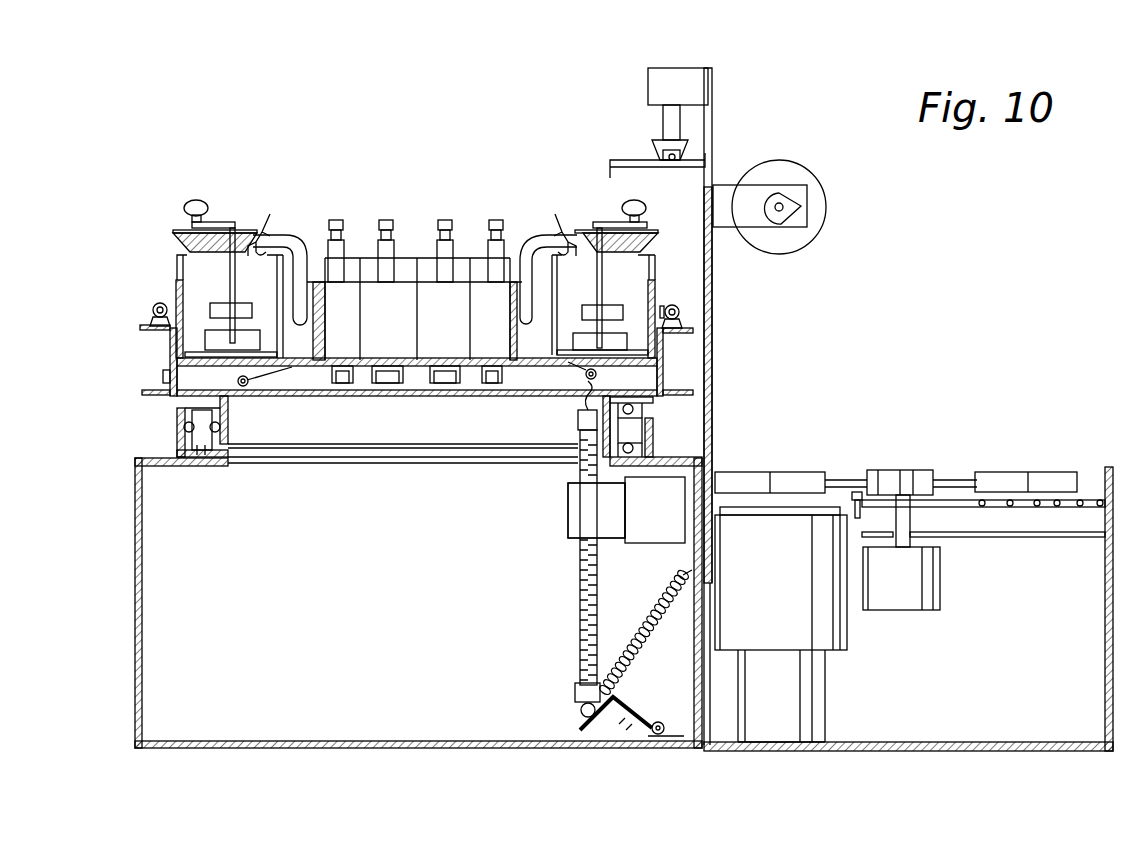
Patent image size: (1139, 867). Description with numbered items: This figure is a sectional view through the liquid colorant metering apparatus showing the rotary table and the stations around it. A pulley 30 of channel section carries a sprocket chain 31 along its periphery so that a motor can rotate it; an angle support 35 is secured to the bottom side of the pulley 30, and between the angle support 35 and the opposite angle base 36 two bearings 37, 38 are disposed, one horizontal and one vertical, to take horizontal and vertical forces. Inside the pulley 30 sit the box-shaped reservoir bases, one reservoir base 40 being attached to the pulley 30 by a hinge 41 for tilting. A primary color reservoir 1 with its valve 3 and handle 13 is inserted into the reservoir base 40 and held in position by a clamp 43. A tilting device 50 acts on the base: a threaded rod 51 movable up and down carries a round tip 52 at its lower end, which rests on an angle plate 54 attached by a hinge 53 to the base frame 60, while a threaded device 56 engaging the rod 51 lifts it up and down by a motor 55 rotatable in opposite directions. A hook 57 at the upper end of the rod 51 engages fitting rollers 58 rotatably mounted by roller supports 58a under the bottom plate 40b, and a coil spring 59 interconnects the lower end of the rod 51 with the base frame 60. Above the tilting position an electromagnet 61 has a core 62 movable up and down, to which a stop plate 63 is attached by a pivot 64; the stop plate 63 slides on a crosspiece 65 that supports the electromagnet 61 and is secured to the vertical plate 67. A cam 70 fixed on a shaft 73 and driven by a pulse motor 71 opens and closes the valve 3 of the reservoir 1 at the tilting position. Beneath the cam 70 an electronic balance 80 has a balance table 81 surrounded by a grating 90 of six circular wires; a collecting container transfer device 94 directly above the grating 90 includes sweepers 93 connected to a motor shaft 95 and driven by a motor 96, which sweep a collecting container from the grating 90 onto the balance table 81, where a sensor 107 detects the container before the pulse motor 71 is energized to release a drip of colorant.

The primary color reservoir 1 is at (557, 340).
The valve 3 is at (652, 228).
The handle 13 is at (532, 259).
The pulley 30 is at (164, 325).
The sprocket chain 31 is at (163, 377).
The angle support 35 is at (228, 409).
The angle base 36 is at (177, 426).
The bearing 37 is at (200, 455).
The bearing 38 is at (635, 407).
The reservoir base 40 is at (655, 290).
The bottom plate 40b is at (507, 385).
The hinge 41 is at (159, 301).
The clamp 43 is at (653, 258).
The tilting device 50 is at (564, 506).
The threaded rod 51 is at (578, 599).
The round tip 52 is at (580, 710).
The hinge 53 is at (675, 712).
The angle plate 54 is at (628, 705).
The motor 55 is at (652, 538).
The threaded device 56 is at (568, 530).
The hook 57 is at (584, 398).
The fitting roller 58 is at (448, 385).
The roller support 58a is at (407, 385).
The coil spring 59 is at (652, 628).
The base frame 60 is at (693, 662).
The electromagnet 61 is at (648, 88).
The core 62 is at (663, 125).
The stop plate 63 is at (622, 162).
The pivot 64 is at (673, 161).
The crosspiece 65 is at (717, 108).
The vertical plate 67 is at (712, 358).
The cam 70 is at (810, 202).
The pulse motor 71 is at (808, 170).
The shaft 73 is at (790, 226).
The electronic balance 80 is at (848, 634).
The balance table 81 is at (790, 491).
The grating 90 is at (1037, 510).
The sweeper 93 is at (1051, 472).
The collecting container transfer device 94 is at (900, 470).
The motor shaft 95 is at (910, 514).
The motor 96 is at (941, 577).
The sensor 107 is at (857, 497).